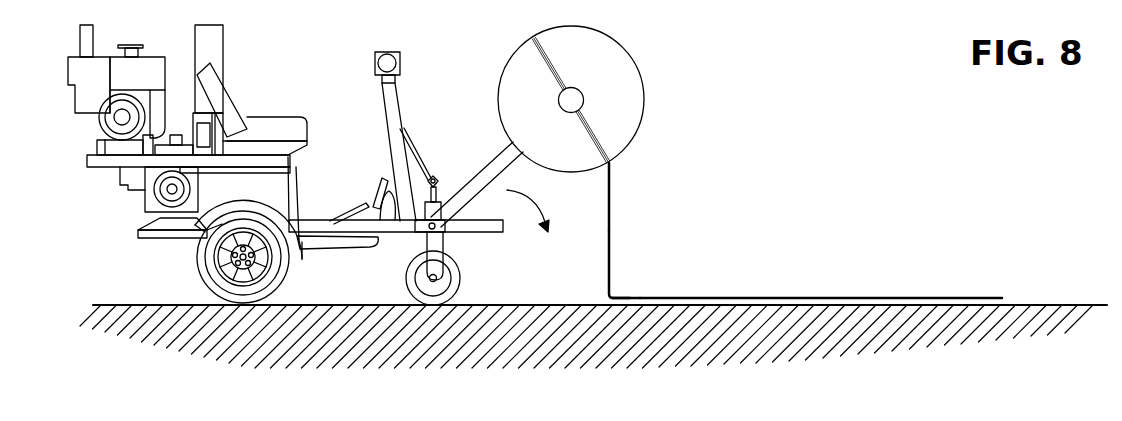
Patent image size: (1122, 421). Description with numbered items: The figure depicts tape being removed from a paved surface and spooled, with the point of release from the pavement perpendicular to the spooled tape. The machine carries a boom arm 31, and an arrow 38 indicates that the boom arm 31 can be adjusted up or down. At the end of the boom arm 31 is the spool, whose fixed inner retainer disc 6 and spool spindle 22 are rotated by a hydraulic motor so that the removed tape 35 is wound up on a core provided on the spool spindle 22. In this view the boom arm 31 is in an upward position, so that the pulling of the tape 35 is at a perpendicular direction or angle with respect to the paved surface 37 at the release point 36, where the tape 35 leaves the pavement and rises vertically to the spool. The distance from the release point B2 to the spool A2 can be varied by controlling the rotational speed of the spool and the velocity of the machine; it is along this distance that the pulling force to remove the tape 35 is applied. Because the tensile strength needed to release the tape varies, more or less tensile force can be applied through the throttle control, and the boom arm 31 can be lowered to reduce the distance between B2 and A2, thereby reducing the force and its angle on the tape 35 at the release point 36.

The fixed inner retainer disc 6 is at (600, 52).
The spool spindle 22 is at (573, 100).
The boom arm 31 is at (500, 167).
The tape 35 is at (863, 300).
The release point 36 is at (620, 298).
The paved surface 37 is at (167, 303).
The arrow 38 is at (530, 207).
The spool A2 is at (610, 163).
The release point B2 is at (617, 298).